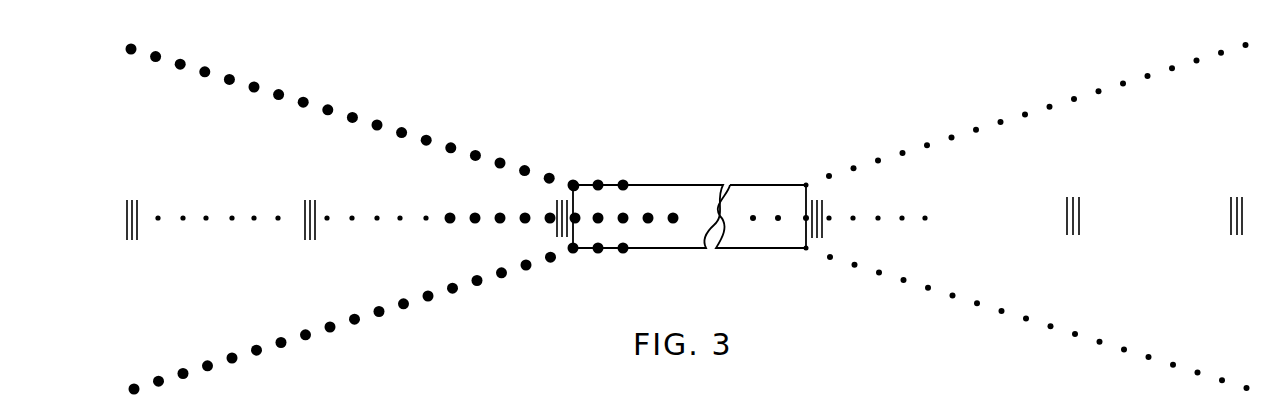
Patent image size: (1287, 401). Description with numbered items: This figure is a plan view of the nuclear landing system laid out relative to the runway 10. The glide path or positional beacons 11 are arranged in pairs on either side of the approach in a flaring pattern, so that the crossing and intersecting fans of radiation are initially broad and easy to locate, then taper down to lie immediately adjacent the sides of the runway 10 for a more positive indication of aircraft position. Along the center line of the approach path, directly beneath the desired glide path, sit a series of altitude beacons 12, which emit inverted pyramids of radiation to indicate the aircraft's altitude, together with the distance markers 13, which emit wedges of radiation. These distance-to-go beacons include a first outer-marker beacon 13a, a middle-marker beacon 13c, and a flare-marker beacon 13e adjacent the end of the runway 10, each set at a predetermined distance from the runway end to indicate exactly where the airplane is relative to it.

The runway 10 is at (760, 198).
The glide path beacons 11 is at (303, 97).
The altitude beacons 12 is at (451, 226).
The distance markers 13 is at (646, 233).
The outer-marker beacon 13a is at (137, 197).
The middle-marker beacon 13c is at (314, 197).
The flare-marker beacon 13e is at (558, 206).